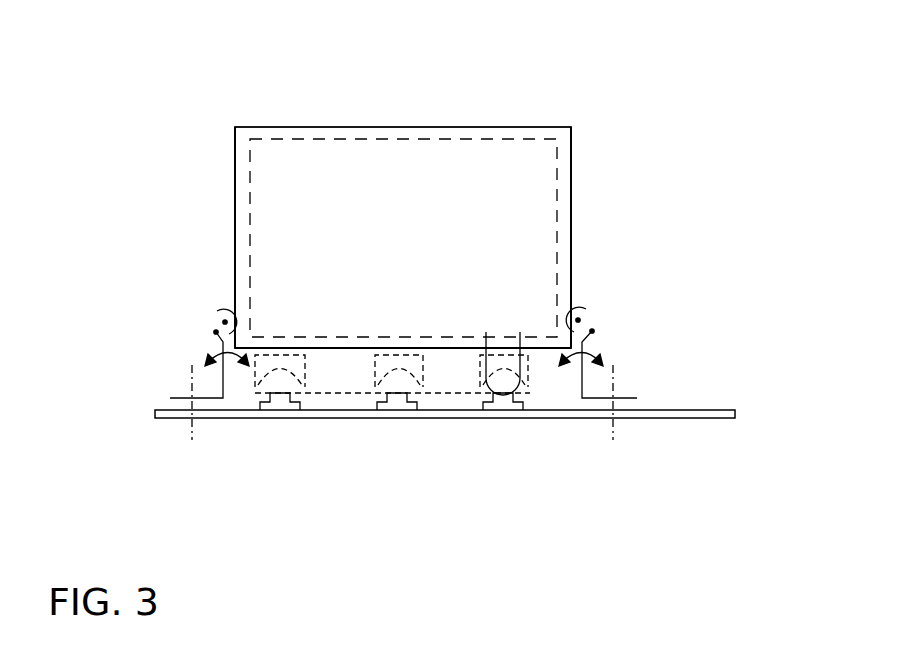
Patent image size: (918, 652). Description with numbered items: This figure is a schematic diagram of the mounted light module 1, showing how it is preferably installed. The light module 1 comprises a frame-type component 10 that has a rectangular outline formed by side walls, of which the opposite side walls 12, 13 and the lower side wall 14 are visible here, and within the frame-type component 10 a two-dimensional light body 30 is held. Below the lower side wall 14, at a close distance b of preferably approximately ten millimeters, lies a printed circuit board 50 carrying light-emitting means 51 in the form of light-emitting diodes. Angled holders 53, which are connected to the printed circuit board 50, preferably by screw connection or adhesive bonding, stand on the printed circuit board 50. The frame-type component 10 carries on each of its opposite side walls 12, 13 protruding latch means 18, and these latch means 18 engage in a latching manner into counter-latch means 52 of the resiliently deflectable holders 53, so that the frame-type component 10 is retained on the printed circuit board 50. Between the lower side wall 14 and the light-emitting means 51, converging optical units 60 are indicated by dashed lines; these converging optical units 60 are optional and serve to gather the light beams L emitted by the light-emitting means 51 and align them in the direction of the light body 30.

The light module 1 is at (593, 81).
The frame-type component 10 is at (585, 119).
The side wall 12 is at (572, 180).
The side wall 13 is at (235, 197).
The lower side wall 14 is at (358, 348).
The latch means 18 is at (225, 322).
The light body 30 is at (569, 248).
The printed circuit board 50 is at (720, 399).
The light-emitting means 51 is at (505, 398).
The counter-latch means 52 is at (216, 332).
The angled holders 53 is at (172, 352).
The converging optical units 60 is at (479, 371).
The distance b is at (338, 364).
The light beams L is at (484, 332).